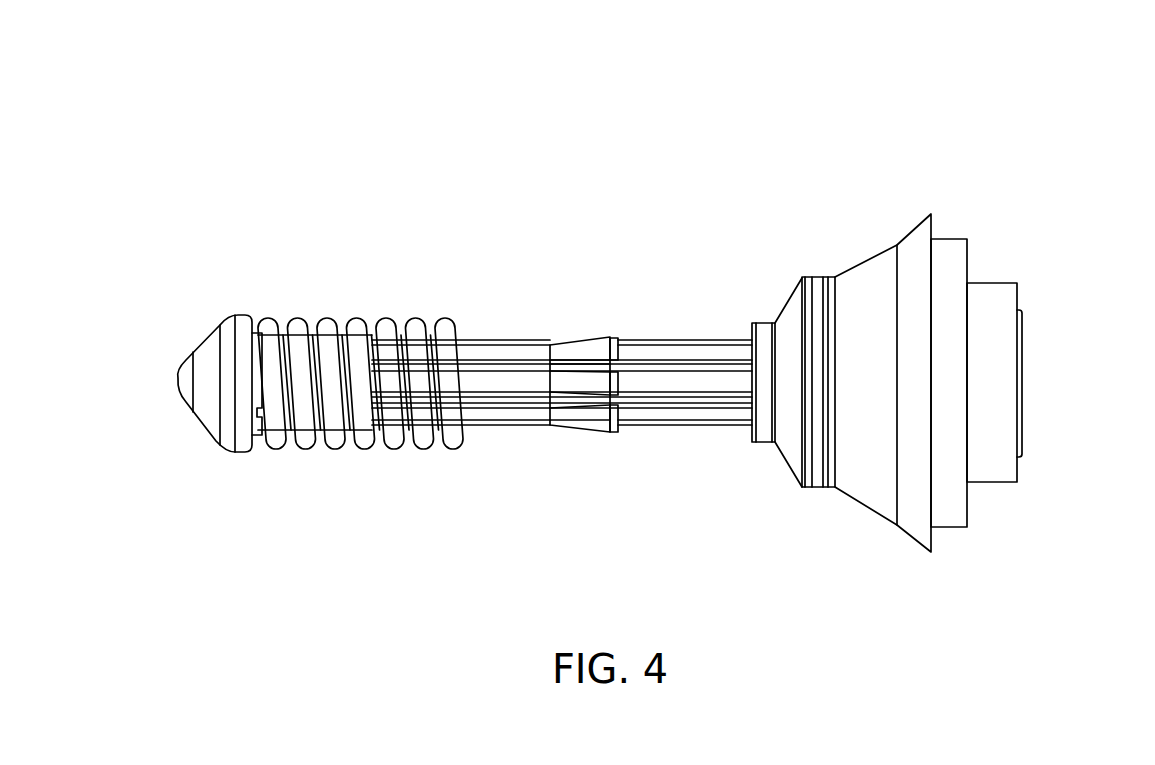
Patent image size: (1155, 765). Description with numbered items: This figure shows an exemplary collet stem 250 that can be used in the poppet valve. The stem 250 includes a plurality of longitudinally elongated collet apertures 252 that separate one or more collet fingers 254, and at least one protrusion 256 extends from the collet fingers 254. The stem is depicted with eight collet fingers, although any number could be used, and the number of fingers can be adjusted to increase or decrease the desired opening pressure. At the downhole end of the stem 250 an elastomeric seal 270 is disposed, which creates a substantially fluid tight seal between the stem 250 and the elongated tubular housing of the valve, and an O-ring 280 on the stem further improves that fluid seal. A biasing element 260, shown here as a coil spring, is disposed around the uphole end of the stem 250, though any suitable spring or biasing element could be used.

The stem 250 is at (1048, 106).
The collet apertures 252 is at (670, 398).
The collet fingers 254 is at (520, 352).
The protrusion 256 is at (598, 342).
The biasing element 260 is at (327, 316).
The elastomeric seal 270 is at (913, 223).
The O-ring 280 is at (817, 489).